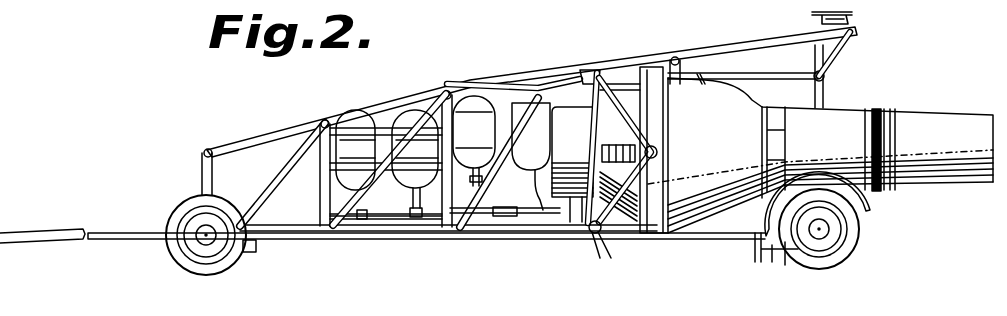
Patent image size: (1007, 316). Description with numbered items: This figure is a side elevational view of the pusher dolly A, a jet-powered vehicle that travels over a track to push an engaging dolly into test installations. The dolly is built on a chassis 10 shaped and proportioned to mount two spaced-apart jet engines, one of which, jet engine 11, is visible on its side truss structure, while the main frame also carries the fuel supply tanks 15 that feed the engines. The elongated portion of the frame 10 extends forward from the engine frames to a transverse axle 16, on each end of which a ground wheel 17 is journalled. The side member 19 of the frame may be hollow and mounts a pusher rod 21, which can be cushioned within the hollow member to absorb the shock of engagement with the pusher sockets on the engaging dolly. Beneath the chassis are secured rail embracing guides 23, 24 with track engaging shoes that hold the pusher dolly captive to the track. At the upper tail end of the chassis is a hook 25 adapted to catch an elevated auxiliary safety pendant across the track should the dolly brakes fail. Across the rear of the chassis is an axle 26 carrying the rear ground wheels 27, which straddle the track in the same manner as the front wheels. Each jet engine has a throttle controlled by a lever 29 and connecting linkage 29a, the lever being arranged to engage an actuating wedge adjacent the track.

The chassis 10 is at (405, 235).
The jet engine 11 is at (730, 162).
The fuel supply tanks 15 is at (468, 103).
The transverse axle 16 is at (205, 230).
The ground wheel 17 is at (176, 222).
The side member 19 is at (295, 236).
The pusher rod 21 is at (66, 231).
The rail embracing guide 23 is at (251, 244).
The rail embracing guide 24 is at (752, 244).
The hook 25 is at (852, 23).
The rear axle 26 is at (824, 229).
The rear ground wheel 27 is at (848, 241).
The throttle lever 29 is at (598, 234).
The connecting linkage 29a is at (604, 78).
The pusher dolly A is at (566, 50).